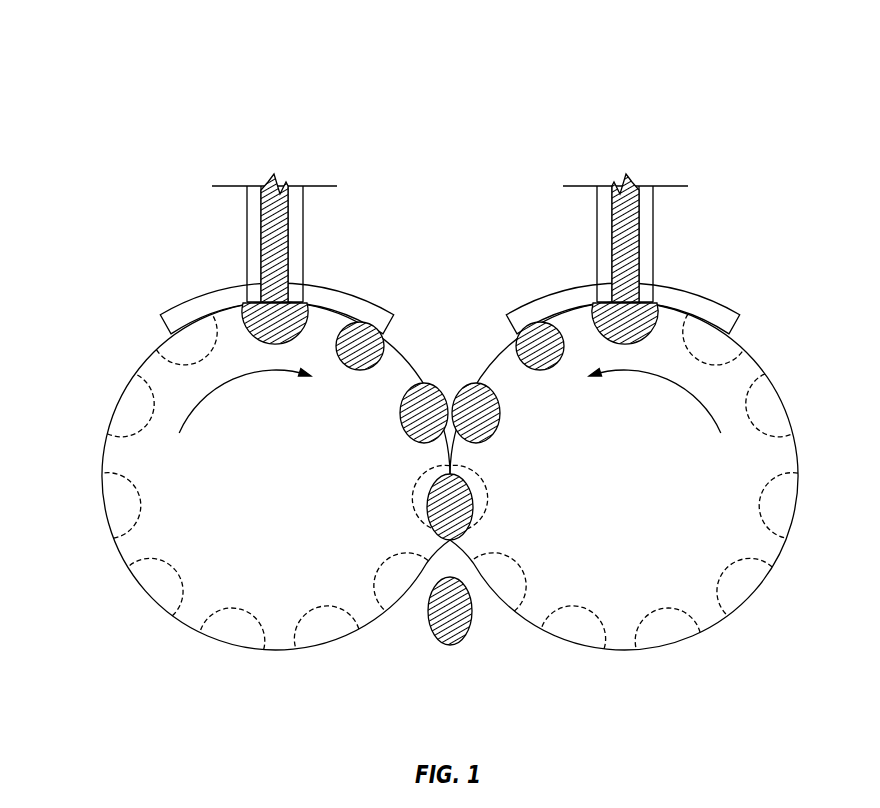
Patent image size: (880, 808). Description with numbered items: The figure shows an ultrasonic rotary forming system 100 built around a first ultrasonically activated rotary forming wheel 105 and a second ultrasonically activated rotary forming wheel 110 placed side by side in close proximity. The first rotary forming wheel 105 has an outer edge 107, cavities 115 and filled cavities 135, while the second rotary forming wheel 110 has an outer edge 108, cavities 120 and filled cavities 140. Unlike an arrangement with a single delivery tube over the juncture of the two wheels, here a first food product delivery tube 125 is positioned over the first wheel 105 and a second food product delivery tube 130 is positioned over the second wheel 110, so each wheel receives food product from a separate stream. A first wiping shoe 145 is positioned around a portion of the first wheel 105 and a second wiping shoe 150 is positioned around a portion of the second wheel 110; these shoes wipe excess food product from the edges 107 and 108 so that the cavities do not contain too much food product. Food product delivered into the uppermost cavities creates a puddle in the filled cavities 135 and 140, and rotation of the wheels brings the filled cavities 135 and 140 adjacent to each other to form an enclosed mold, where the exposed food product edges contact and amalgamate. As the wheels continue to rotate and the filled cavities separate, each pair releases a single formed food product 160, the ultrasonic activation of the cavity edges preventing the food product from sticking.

The ultrasonic rotary forming system 100 is at (174, 112).
The first ultrasonically activated rotary forming wheel 105 is at (199, 596).
The outer edge 107 is at (103, 492).
The outer edge 108 is at (674, 649).
The second ultrasonically activated rotary forming wheel 110 is at (755, 552).
The cavities 115 is at (133, 408).
The cavities 120 is at (783, 410).
The first food product delivery tube 125 is at (282, 195).
The second food product delivery tube 130 is at (624, 195).
The filled cavities 135 is at (402, 405).
The filled cavities 140 is at (498, 405).
The first wiping shoe 145 is at (208, 302).
The second wiping shoe 150 is at (696, 303).
The formed food product 160 is at (450, 646).